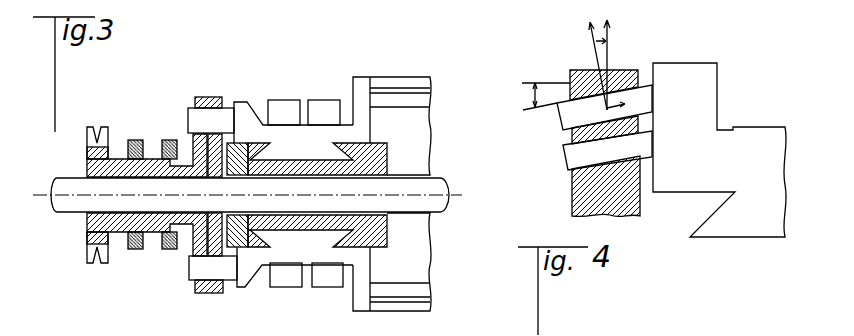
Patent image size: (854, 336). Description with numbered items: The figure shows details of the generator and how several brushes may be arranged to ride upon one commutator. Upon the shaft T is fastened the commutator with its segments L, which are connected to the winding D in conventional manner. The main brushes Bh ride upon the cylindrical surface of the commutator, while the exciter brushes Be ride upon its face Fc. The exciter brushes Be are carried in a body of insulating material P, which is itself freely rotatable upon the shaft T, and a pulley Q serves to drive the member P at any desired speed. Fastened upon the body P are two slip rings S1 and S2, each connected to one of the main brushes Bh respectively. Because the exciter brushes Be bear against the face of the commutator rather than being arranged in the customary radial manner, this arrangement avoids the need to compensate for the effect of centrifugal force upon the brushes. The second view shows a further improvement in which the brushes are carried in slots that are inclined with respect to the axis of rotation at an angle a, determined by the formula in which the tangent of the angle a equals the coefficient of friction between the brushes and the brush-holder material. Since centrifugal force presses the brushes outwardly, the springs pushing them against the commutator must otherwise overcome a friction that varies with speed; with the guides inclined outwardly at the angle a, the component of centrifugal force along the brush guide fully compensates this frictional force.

In FIG. 3, the shaft T is at (436, 178).
In FIG. 3, the body of insulating material P is at (203, 97).
In FIG. 4, the body of insulating material P is at (572, 190).
In FIG. 3, the pulley Q is at (92, 232).
In FIG. 3, the slip ring S1 is at (134, 140).
In FIG. 3, the slip ring S2 is at (167, 140).
In FIG. 3, the exciter brushes Be is at (223, 118).
In FIG. 4, the exciter brushes Be is at (562, 143).
In FIG. 3, the main brushes Bh is at (318, 100).
In FIG. 3, the commutator segments L is at (247, 288).
In FIG. 4, the commutator segments L is at (694, 97).
In FIG. 3, the commutator face Fc is at (235, 281).
In FIG. 4, the commutator face Fc is at (650, 67).
In FIG. 3, the winding D is at (388, 82).
In FIG. 4, the inclination angle a is at (573, 65).